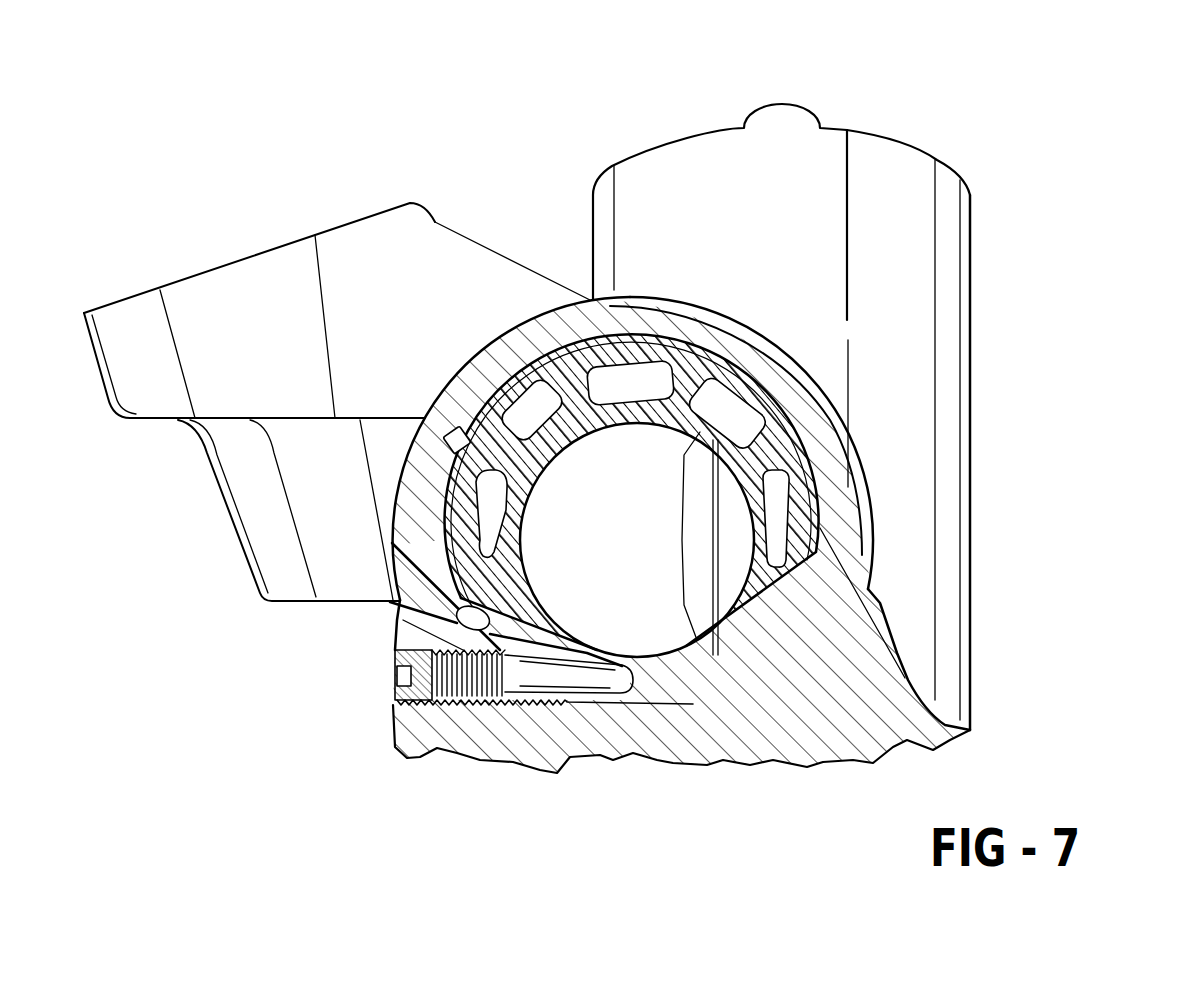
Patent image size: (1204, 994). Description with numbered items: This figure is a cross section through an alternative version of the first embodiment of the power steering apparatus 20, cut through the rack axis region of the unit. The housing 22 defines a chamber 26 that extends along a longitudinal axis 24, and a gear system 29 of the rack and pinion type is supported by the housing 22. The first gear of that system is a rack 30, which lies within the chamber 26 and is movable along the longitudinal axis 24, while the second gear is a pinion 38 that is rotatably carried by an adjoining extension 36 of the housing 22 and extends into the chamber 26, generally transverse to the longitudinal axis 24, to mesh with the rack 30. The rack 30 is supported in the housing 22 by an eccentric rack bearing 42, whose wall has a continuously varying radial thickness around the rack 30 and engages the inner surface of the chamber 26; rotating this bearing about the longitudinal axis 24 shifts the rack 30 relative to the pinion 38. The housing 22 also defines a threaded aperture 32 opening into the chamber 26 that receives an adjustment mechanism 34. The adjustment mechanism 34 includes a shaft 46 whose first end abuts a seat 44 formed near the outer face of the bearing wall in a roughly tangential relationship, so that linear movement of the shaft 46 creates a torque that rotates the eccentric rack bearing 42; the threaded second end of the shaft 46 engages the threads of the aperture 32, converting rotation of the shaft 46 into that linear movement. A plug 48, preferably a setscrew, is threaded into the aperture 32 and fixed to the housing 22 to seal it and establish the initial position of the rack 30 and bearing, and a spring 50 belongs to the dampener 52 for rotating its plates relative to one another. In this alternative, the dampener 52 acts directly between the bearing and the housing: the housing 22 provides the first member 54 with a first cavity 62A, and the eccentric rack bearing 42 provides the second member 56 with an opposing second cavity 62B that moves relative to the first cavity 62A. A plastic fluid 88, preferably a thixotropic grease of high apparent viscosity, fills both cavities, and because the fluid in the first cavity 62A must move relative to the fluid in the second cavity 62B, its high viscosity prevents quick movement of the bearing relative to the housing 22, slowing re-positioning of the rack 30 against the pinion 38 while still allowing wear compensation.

The power steering apparatus 20 is at (995, 162).
The housing 22 is at (492, 248).
The longitudinal axis 24 is at (642, 543).
The chamber 26 is at (425, 603).
The gear system 29 is at (673, 575).
The rack 30 is at (682, 537).
The aperture 32 is at (392, 695).
The adjustment mechanism 34 is at (450, 708).
The adjoining extension 36 is at (963, 222).
The pinion 38 is at (718, 563).
The eccentric rack bearing 42 is at (690, 365).
The seat 44 is at (638, 750).
The shaft 46 is at (580, 700).
The plug 48 is at (395, 693).
The spring 50 is at (413, 708).
The dampener 52 is at (455, 423).
The first member 54 is at (420, 460).
The second member 56 is at (508, 402).
The first cavity 62A is at (418, 415).
The second cavity 62B is at (505, 400).
The plastic fluid 88 is at (430, 500).